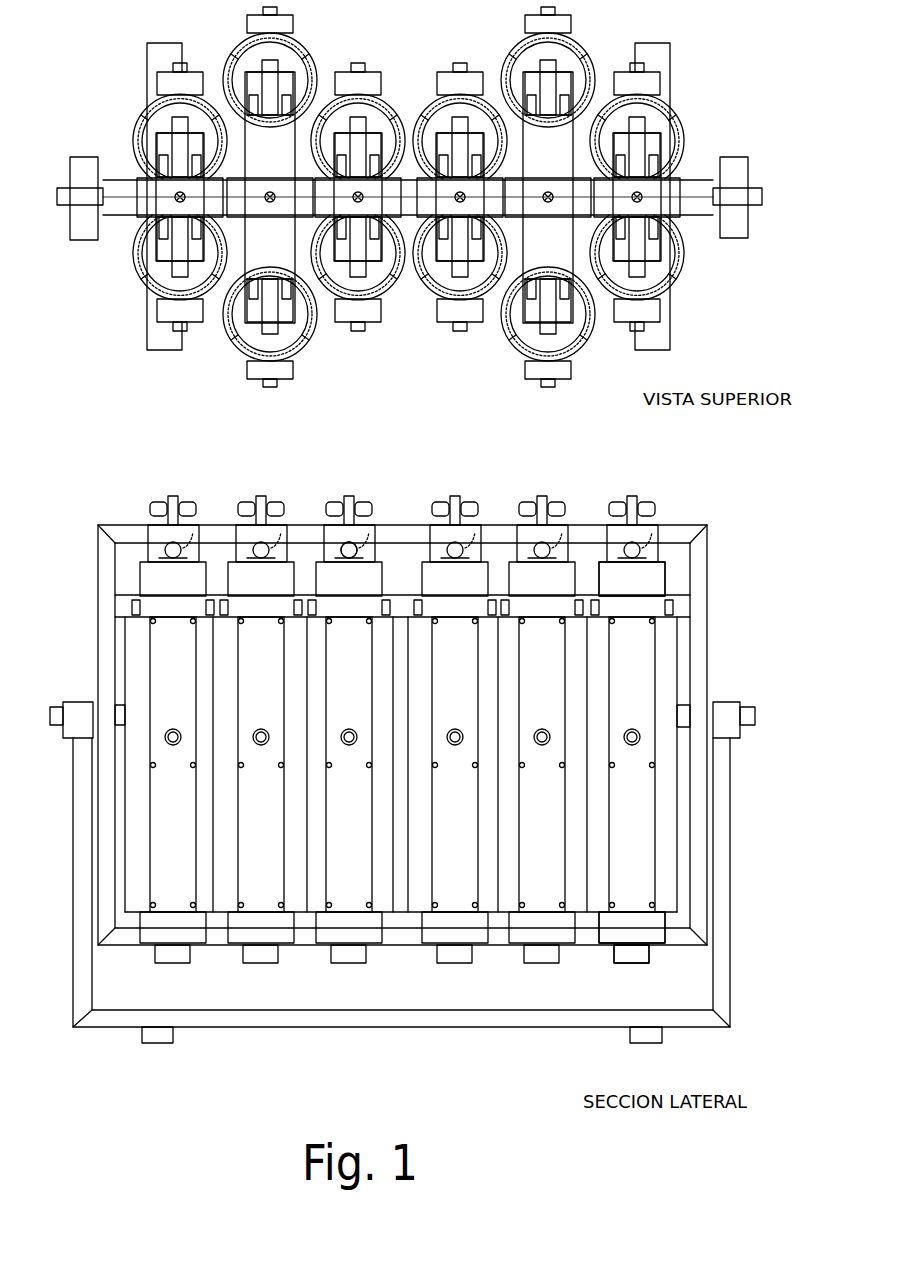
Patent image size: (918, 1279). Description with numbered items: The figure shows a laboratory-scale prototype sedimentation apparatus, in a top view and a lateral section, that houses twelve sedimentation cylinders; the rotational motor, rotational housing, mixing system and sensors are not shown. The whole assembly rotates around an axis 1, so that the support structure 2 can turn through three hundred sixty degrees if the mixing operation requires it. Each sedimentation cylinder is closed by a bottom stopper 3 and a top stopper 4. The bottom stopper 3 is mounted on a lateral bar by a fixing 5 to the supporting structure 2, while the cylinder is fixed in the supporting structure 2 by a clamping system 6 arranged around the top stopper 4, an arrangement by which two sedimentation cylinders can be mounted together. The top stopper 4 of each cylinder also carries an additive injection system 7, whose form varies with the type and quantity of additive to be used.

The axis 1 is at (765, 196).
The support structure 2 is at (697, 575).
The bottom stopper 3 is at (662, 923).
The top stopper 4 is at (657, 587).
The fixing 5 is at (643, 950).
The clamping system 6 is at (638, 190).
The additive injection system 7 is at (350, 550).